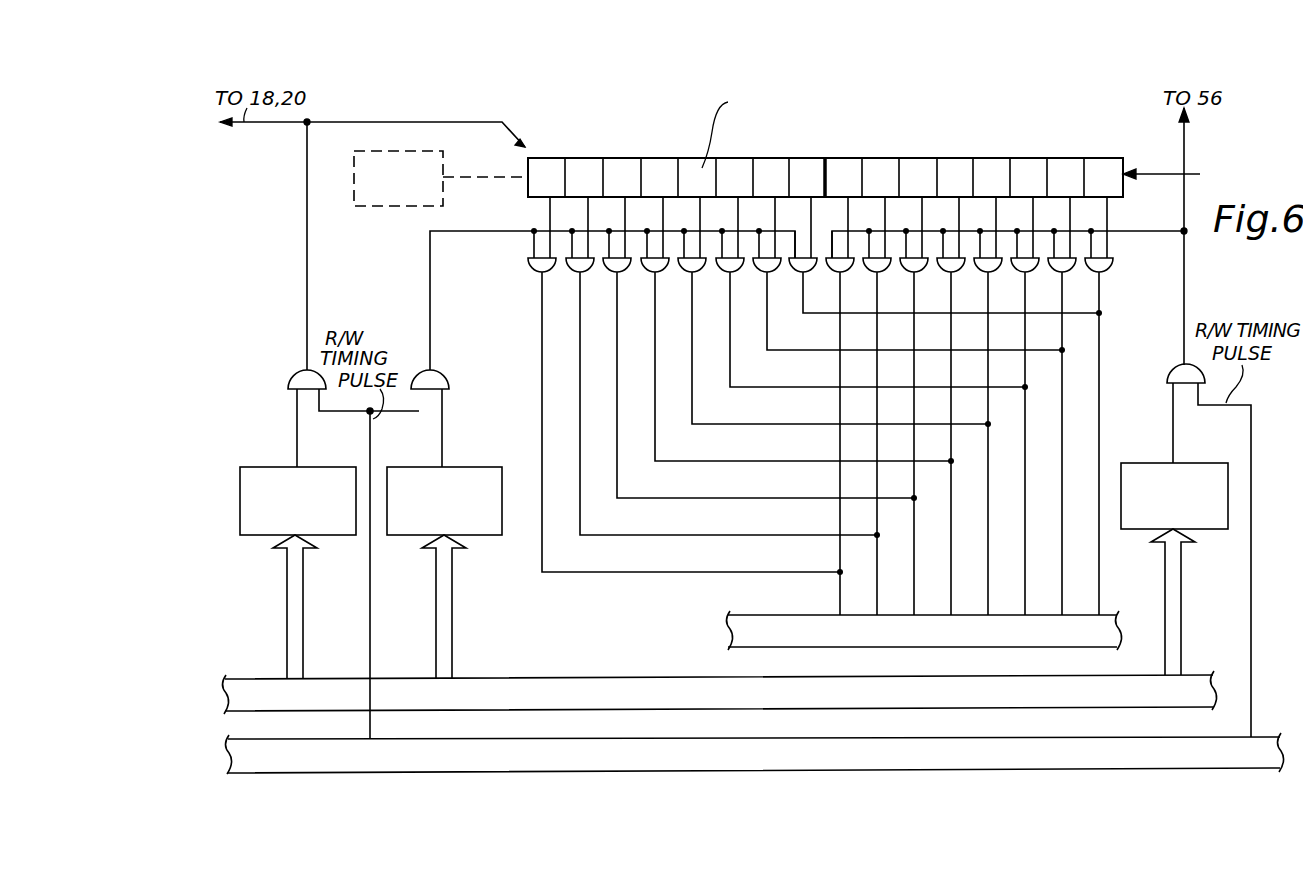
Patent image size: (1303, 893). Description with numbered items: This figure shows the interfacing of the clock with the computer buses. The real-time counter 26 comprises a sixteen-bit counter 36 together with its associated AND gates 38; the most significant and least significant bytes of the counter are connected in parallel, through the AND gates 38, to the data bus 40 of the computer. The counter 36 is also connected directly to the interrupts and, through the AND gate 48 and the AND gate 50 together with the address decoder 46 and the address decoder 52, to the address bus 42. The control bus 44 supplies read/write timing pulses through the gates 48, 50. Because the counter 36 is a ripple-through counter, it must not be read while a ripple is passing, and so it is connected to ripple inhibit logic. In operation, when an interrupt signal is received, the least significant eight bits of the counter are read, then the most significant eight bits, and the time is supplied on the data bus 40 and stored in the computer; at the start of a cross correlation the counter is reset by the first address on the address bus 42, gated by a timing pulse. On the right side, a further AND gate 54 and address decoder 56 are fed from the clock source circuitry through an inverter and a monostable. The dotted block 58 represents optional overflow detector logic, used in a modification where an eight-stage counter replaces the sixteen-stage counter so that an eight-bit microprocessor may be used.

The real-time counter 26 is at (1010, 131).
The 16-bit counter 36 is at (1100, 158).
The AND gates 38 is at (1112, 258).
The data bus 40 is at (788, 620).
The address bus 42 is at (572, 693).
The control bus 44 is at (488, 748).
The address decoder 46 is at (266, 467).
The AND gate 48 is at (295, 370).
The AND gate 50 is at (442, 370).
The address decoder 52 is at (472, 467).
The AND gate 54 is at (1168, 370).
The address decoder 56 is at (1152, 462).
The overflow detector logic 58 is at (400, 206).